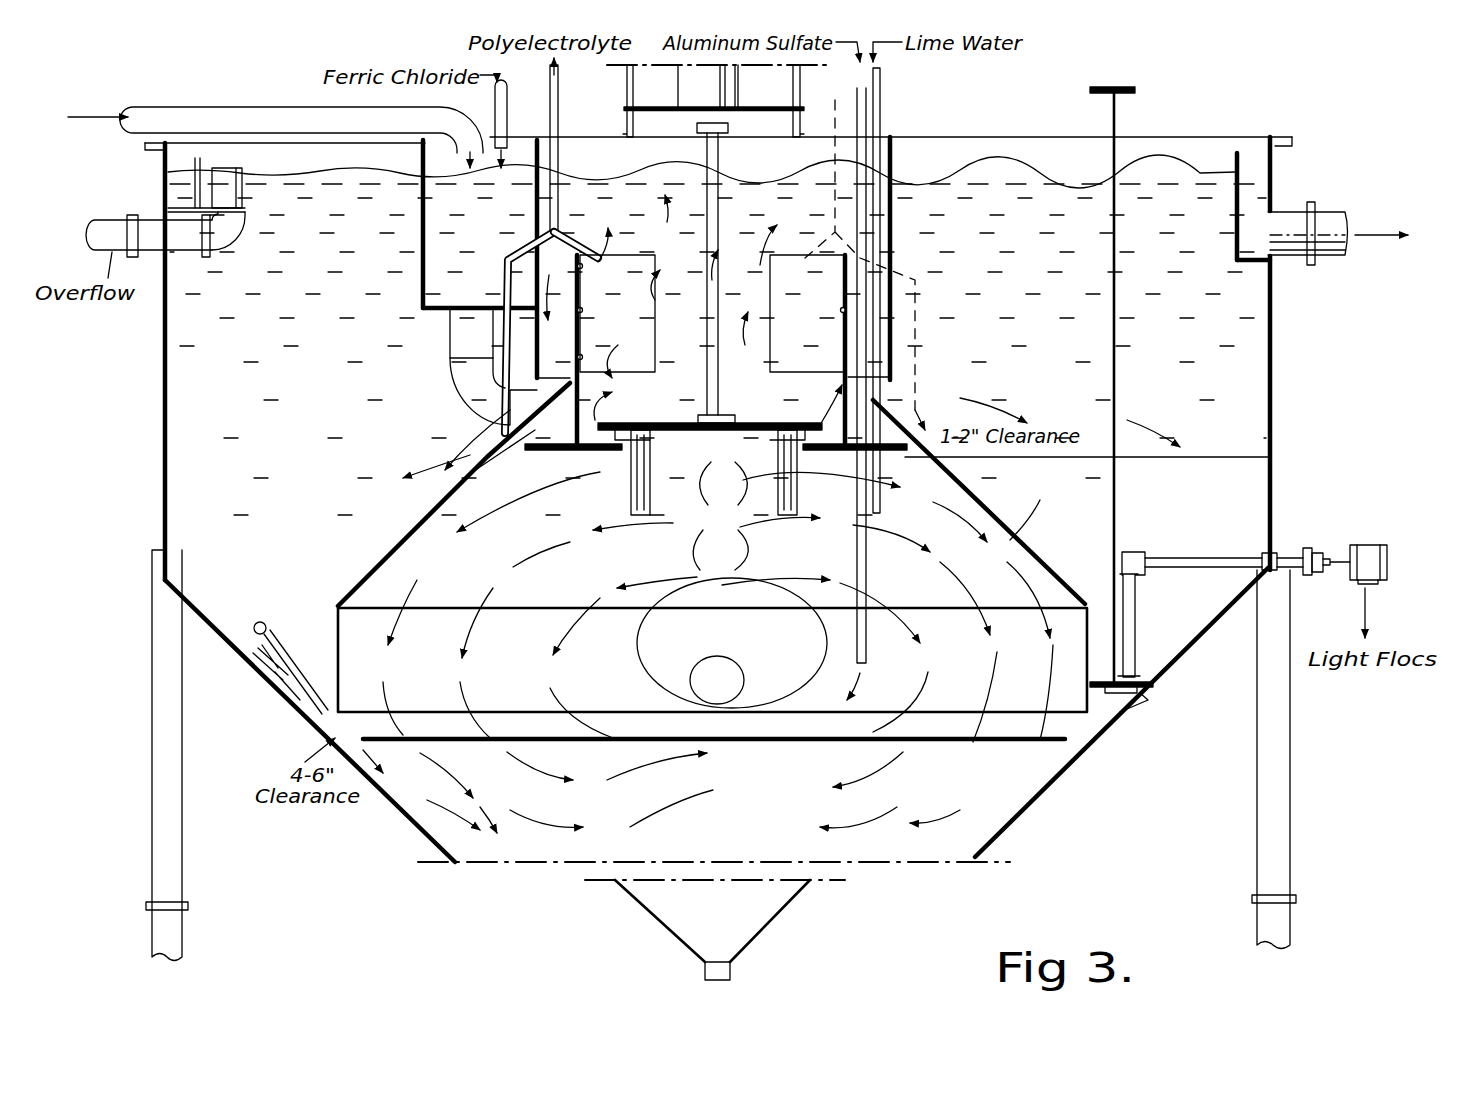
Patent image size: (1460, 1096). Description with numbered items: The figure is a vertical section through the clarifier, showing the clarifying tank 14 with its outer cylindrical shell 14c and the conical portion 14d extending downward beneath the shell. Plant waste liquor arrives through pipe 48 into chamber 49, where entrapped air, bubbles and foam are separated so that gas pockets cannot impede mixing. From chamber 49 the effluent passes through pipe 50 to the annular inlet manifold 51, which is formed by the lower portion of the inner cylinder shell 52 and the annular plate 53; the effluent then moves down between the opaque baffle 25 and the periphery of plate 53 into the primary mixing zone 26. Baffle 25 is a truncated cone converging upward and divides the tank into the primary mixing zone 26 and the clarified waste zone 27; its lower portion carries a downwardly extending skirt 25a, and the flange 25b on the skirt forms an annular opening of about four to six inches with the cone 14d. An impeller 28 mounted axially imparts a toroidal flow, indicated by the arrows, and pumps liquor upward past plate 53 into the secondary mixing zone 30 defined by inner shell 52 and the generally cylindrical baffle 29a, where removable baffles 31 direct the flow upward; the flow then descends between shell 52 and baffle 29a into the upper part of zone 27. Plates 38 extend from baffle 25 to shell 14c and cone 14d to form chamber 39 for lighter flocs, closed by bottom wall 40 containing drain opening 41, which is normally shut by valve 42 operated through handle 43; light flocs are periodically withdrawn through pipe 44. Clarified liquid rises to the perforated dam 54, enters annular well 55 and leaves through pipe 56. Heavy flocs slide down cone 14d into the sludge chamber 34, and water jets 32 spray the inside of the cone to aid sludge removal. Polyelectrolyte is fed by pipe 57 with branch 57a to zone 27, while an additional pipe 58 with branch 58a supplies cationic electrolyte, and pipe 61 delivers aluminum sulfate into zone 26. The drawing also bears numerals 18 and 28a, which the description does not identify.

The clarifying tank 14 is at (195, 440).
The outer cylindrical shell 14c is at (163, 484).
The conical portion 14d is at (408, 815).
The ferric chloride feed tube 18 is at (508, 112).
The opaque baffle 25 is at (458, 487).
The skirt 25a is at (340, 670).
The flange 25b is at (330, 727).
The primary mixing zone 26 is at (440, 842).
The clarified waste zone 27 is at (200, 509).
The impeller 28 is at (630, 499).
The impeller plate 28a is at (710, 414).
The cylindrical baffle 29a is at (535, 192).
The secondary mixing zone 30 is at (780, 190).
The removable baffles 31 is at (655, 333).
The water jets 32 is at (305, 712).
The sludge chamber 34 is at (712, 930).
The plates 38 is at (1262, 457).
The chamber 39 is at (1252, 484).
The bottom wall 40 is at (1138, 695).
The drain opening 41 is at (1140, 685).
The valve 42 is at (1128, 708).
The handle 43 is at (1137, 89).
The pipe 44 is at (1233, 562).
The pipe 48 is at (258, 117).
The chamber 49 is at (420, 244).
The pipe 50 is at (452, 385).
The annular inlet manifold 51 is at (492, 424).
The inner cylinder shell 52 is at (578, 392).
The annular plate 53 is at (556, 452).
The perforated dam 54 is at (1236, 192).
The annular well 55 is at (1252, 218).
The pipe 56 is at (1335, 218).
The pipe 57 is at (560, 120).
The branch 57a is at (512, 256).
The pipe 58 is at (840, 112).
The branch 58a is at (925, 318).
The pipe 61 is at (856, 559).